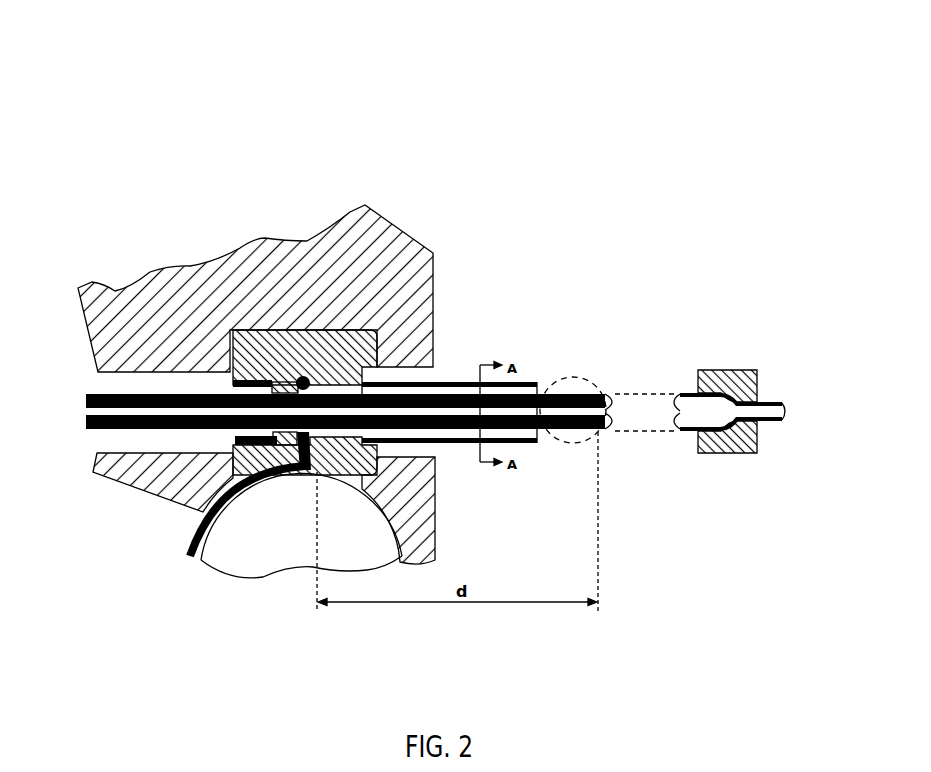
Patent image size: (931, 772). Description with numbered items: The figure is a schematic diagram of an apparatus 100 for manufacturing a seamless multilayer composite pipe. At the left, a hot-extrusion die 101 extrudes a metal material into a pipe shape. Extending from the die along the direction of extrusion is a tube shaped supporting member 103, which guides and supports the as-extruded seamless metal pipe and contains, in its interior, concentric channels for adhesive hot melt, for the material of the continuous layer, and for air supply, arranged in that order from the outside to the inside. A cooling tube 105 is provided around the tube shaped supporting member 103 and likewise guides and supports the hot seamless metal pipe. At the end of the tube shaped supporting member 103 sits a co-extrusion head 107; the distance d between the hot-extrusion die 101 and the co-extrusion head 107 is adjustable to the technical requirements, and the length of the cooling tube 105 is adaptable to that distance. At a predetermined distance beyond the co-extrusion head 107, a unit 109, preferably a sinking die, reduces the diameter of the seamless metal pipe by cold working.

The apparatus 100 is at (404, 122).
The hot-extrusion die 101 is at (305, 387).
The tube shaped supporting member 103 is at (177, 430).
The cooling tube 105 is at (445, 447).
The co-extrusion head 107 is at (577, 378).
The unit for reducing the diameter 109 is at (745, 370).